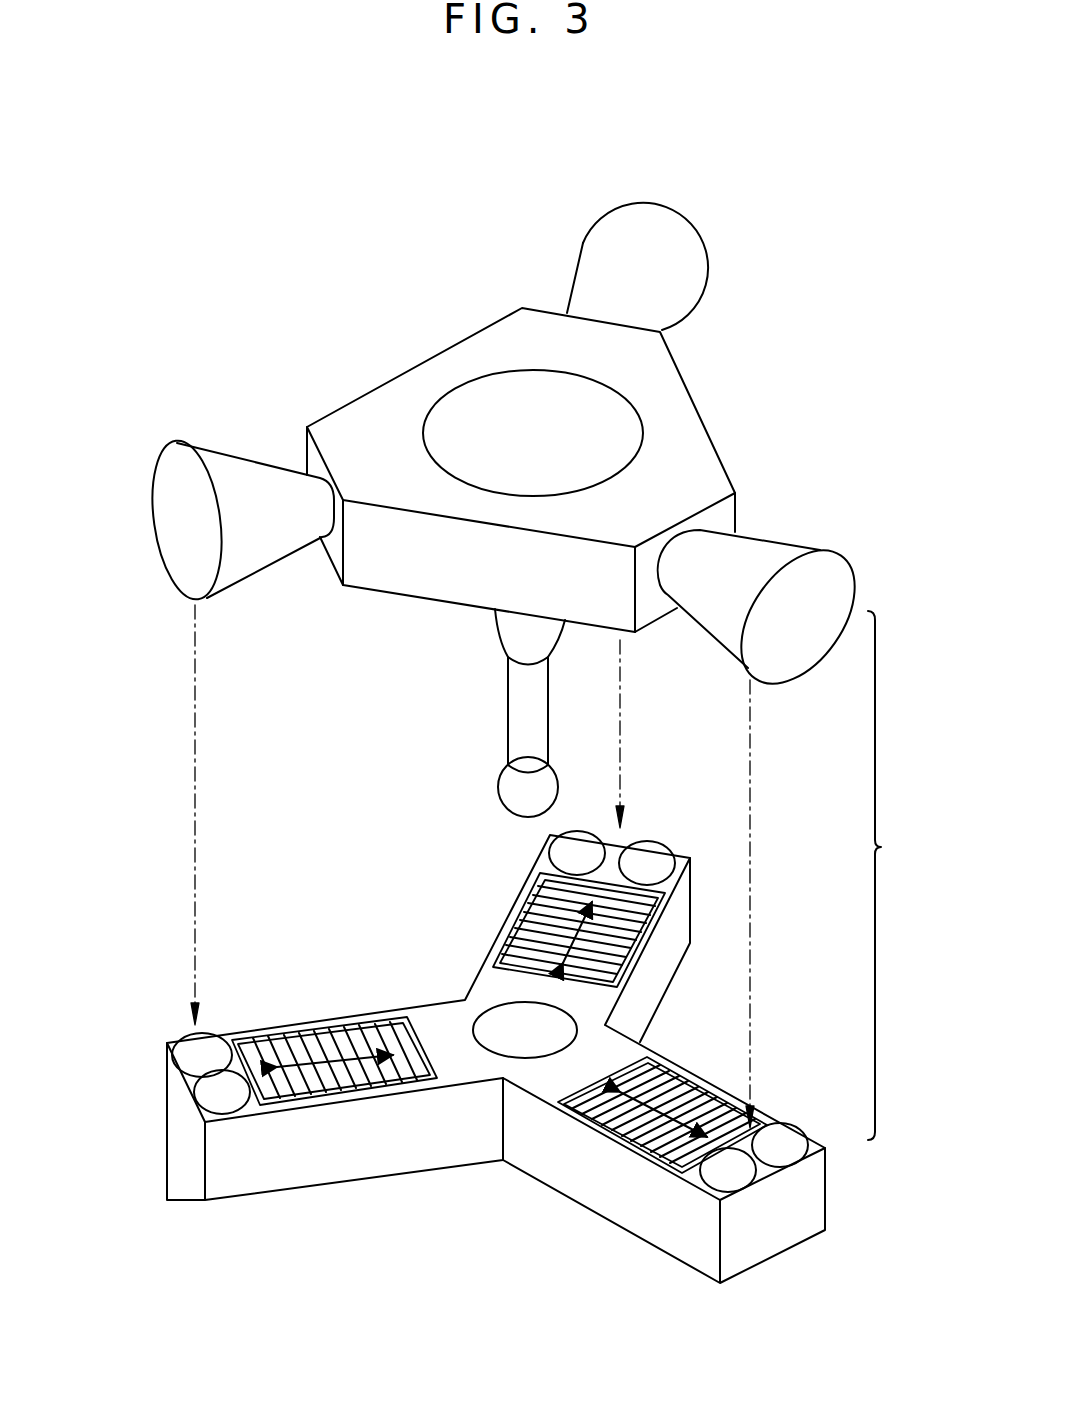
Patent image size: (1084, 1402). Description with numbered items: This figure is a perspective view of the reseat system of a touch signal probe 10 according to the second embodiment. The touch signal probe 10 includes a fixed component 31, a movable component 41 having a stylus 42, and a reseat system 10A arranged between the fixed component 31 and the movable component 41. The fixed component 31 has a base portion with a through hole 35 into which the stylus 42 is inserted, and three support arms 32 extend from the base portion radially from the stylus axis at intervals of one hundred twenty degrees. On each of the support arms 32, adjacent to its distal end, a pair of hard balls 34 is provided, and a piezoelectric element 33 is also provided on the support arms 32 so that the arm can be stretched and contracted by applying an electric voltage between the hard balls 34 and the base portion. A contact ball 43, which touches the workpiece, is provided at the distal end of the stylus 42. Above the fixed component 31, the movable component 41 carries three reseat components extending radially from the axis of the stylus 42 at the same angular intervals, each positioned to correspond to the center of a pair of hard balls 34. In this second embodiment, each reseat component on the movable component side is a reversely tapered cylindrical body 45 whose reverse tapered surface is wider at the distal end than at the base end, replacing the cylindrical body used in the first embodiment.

The touch signal probe 10 is at (315, 243).
The reseat system 10A is at (911, 875).
The fixed component 31 is at (530, 1083).
The support arms 32 is at (662, 970).
The piezoelectric element 33 is at (540, 927).
The hard balls 34 is at (647, 847).
The through hole 35 is at (513, 1042).
The movable component 41 is at (688, 427).
The stylus 42 is at (523, 704).
The contact ball 43 is at (518, 790).
The reversely tapered cylindrical body 45 is at (595, 277).